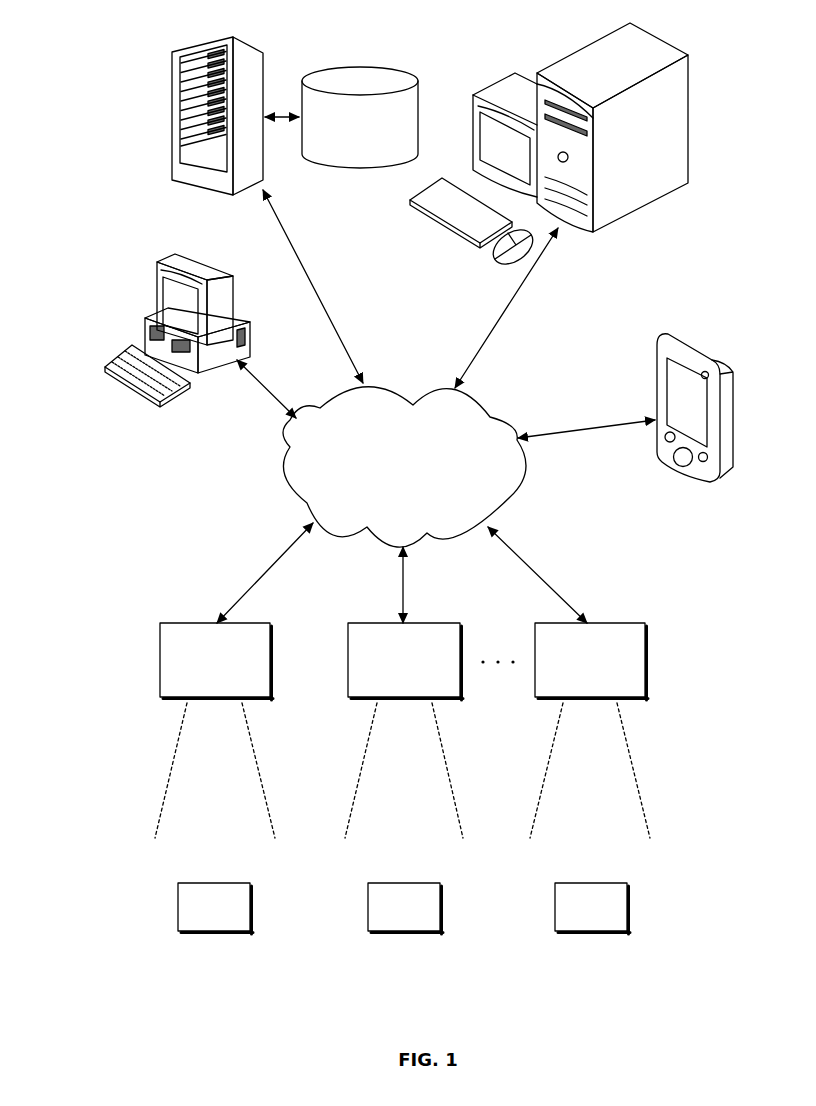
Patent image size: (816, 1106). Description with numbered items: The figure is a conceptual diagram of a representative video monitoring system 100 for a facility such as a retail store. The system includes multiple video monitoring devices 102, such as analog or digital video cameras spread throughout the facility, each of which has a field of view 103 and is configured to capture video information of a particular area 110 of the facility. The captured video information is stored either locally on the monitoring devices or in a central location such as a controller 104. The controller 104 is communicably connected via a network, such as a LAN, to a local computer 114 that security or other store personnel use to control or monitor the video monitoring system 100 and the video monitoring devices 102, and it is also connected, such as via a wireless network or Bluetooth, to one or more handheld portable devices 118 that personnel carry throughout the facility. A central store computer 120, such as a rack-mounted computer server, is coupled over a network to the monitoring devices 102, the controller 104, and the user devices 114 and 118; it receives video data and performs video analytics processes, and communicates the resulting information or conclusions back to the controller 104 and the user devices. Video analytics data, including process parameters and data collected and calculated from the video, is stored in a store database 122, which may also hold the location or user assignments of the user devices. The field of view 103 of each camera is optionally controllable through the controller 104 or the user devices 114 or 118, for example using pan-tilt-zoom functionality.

The video monitoring system 100 is at (80, 41).
The video monitoring devices 102 is at (177, 623).
The field of view 103 is at (118, 705).
The controller 104 is at (668, 46).
The particular area 110 is at (253, 907).
The local computer 114 is at (222, 270).
The handheld portable devices 118 is at (657, 346).
The central store computer 120 is at (205, 43).
The store database 122 is at (360, 66).